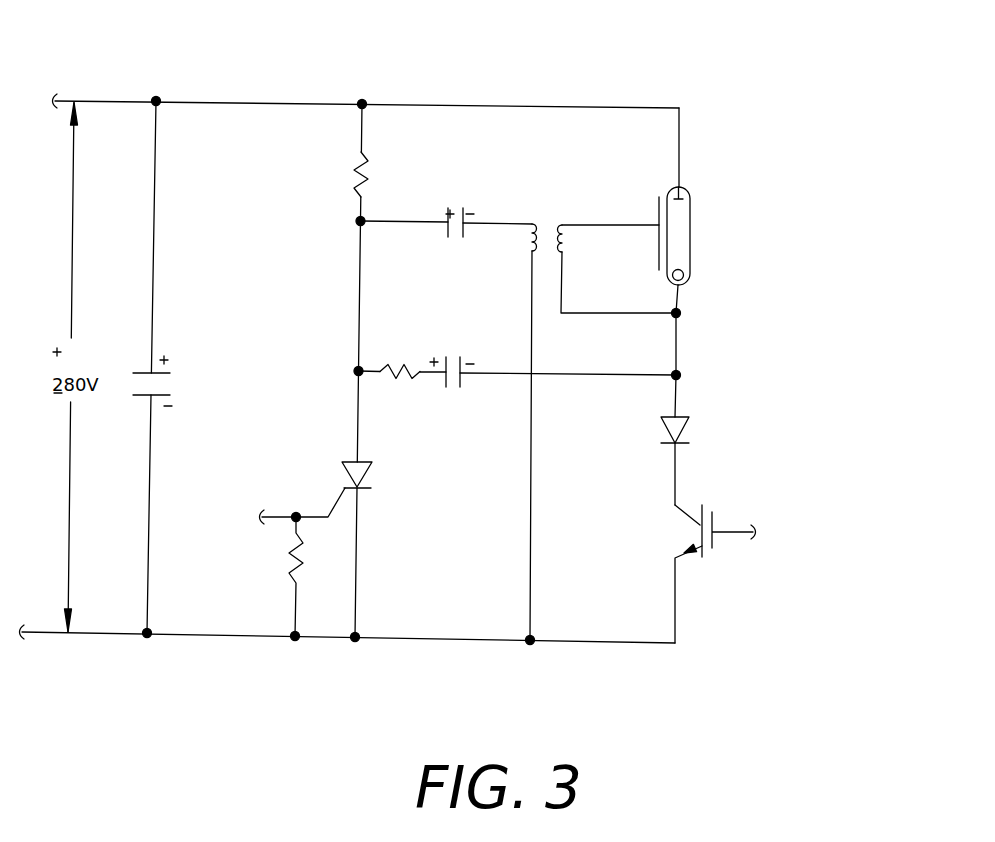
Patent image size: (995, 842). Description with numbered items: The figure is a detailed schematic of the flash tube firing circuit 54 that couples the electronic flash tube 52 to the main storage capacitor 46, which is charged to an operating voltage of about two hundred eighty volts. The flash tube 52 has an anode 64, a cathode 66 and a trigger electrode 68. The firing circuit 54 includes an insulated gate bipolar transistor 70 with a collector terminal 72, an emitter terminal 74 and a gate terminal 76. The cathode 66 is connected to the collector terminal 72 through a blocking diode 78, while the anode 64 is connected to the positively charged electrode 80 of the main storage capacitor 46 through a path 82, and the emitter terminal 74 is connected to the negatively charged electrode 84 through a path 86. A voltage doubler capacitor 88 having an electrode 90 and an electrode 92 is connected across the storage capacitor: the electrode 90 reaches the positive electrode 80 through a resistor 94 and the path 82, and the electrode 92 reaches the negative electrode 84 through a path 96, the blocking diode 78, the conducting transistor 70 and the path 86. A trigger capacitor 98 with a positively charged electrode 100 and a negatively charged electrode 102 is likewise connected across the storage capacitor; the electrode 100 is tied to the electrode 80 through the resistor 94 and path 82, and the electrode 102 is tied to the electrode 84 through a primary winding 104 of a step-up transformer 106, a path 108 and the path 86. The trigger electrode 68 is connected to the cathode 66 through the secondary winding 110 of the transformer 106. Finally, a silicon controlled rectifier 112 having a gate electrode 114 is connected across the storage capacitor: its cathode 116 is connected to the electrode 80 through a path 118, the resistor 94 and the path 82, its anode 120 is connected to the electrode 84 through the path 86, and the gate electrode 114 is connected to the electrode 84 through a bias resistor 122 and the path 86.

The main storage capacitor 46 is at (200, 358).
The flash tube 52 is at (691, 233).
The flash tube firing circuit 54 is at (607, 76).
The anode 64 is at (680, 196).
The cathode 66 is at (689, 284).
The trigger electrode 68 is at (659, 213).
The insulated gate bipolar transistor 70 is at (752, 488).
The collector terminal 72 is at (677, 481).
The emitter terminal 74 is at (672, 586).
The gate terminal 76 is at (733, 533).
The blocking diode 78 is at (707, 424).
The positively charged electrode 80 is at (142, 371).
The path 82 is at (244, 101).
The negatively charged electrode 84 is at (142, 397).
The path 86 is at (240, 641).
The voltage doubler capacitor 88 is at (452, 342).
The electrode 90 is at (446, 380).
The electrode 92 is at (464, 359).
The resistor 94 is at (370, 170).
The path 96 is at (594, 374).
The trigger capacitor 98 is at (455, 190).
The positively charged electrode 100 is at (441, 231).
The negatively charged electrode 102 is at (466, 231).
The primary winding 104 is at (531, 252).
The step-up transformer 106 is at (546, 200).
The path 108 is at (533, 490).
The secondary winding 110 is at (569, 253).
The silicon controlled rectifier 112 is at (387, 454).
The gate electrode 114 is at (336, 503).
The cathode 116 is at (352, 462).
The path 118 is at (363, 313).
The anode 120 is at (366, 491).
The bias resistor 122 is at (290, 563).